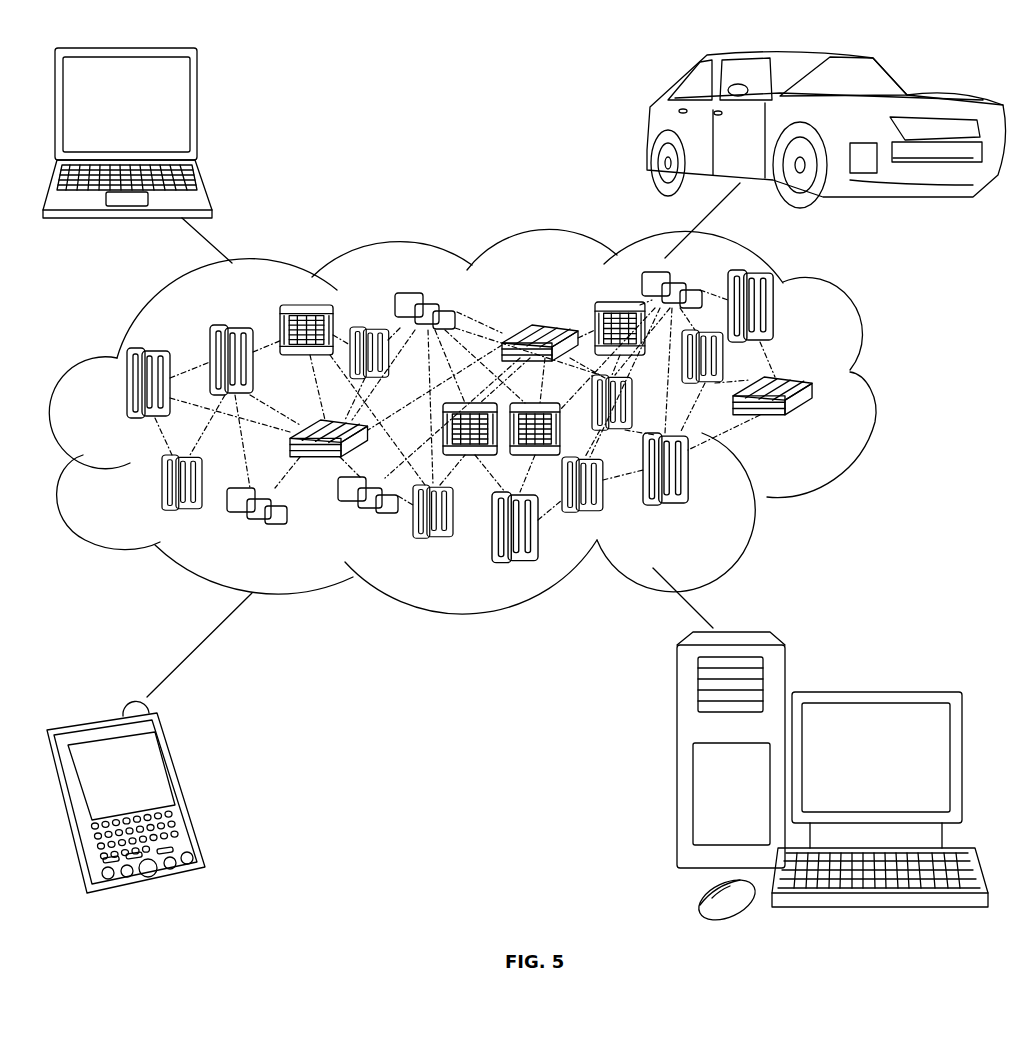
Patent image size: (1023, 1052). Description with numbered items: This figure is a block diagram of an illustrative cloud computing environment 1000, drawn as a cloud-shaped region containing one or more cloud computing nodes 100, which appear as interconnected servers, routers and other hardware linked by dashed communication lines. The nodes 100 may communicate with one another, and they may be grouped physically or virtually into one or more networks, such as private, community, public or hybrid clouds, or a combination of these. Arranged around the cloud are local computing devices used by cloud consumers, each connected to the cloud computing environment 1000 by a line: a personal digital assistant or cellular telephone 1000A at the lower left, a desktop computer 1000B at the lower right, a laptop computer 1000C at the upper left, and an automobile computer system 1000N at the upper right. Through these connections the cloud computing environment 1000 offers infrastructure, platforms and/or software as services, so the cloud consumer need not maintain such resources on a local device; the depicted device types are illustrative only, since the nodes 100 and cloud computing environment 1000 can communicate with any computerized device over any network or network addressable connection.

The cloud computing nodes 100 is at (818, 427).
The cloud computing environment 1000 is at (877, 393).
The personal digital assistant (PDA) or cellular telephone 1000A is at (195, 789).
The desktop computer 1000B is at (873, 692).
The laptop computer 1000C is at (195, 115).
The automobile computer system 1000N is at (647, 129).